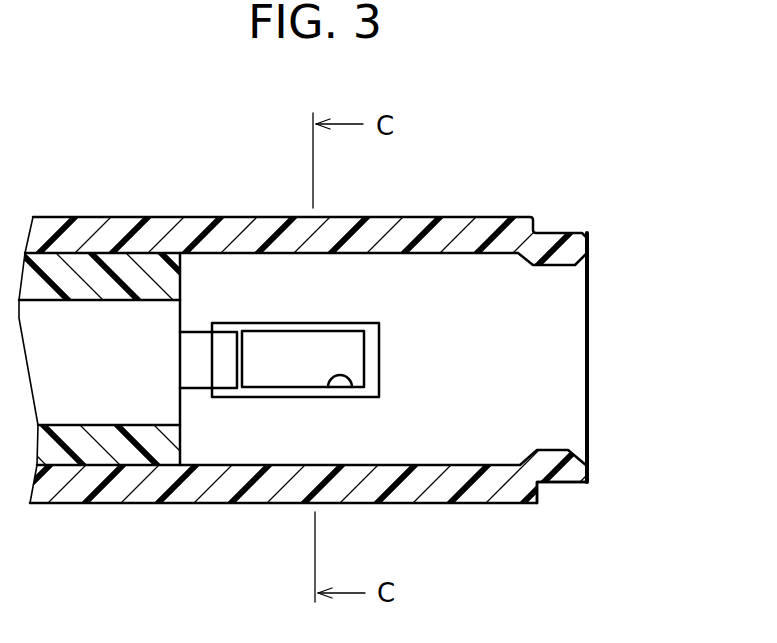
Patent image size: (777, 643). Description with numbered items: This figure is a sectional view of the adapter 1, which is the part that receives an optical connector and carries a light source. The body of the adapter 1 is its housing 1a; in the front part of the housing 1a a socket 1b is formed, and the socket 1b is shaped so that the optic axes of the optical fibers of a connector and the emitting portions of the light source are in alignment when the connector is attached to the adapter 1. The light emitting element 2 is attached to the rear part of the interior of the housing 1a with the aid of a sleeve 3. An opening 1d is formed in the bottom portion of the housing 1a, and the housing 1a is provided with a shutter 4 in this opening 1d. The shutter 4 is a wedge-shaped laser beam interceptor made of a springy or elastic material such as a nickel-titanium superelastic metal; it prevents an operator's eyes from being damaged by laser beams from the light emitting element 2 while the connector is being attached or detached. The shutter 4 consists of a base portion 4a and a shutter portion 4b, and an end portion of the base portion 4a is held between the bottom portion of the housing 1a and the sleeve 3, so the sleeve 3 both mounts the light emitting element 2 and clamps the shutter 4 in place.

The adapter 1 is at (415, 214).
The housing 1a is at (513, 490).
The socket 1b is at (550, 363).
The opening 1d is at (352, 390).
The light emitting element 2 is at (88, 325).
The sleeve 3 is at (98, 457).
The shutter 4 is at (282, 321).
The base portion 4a is at (203, 352).
The shutter portion 4b is at (267, 378).